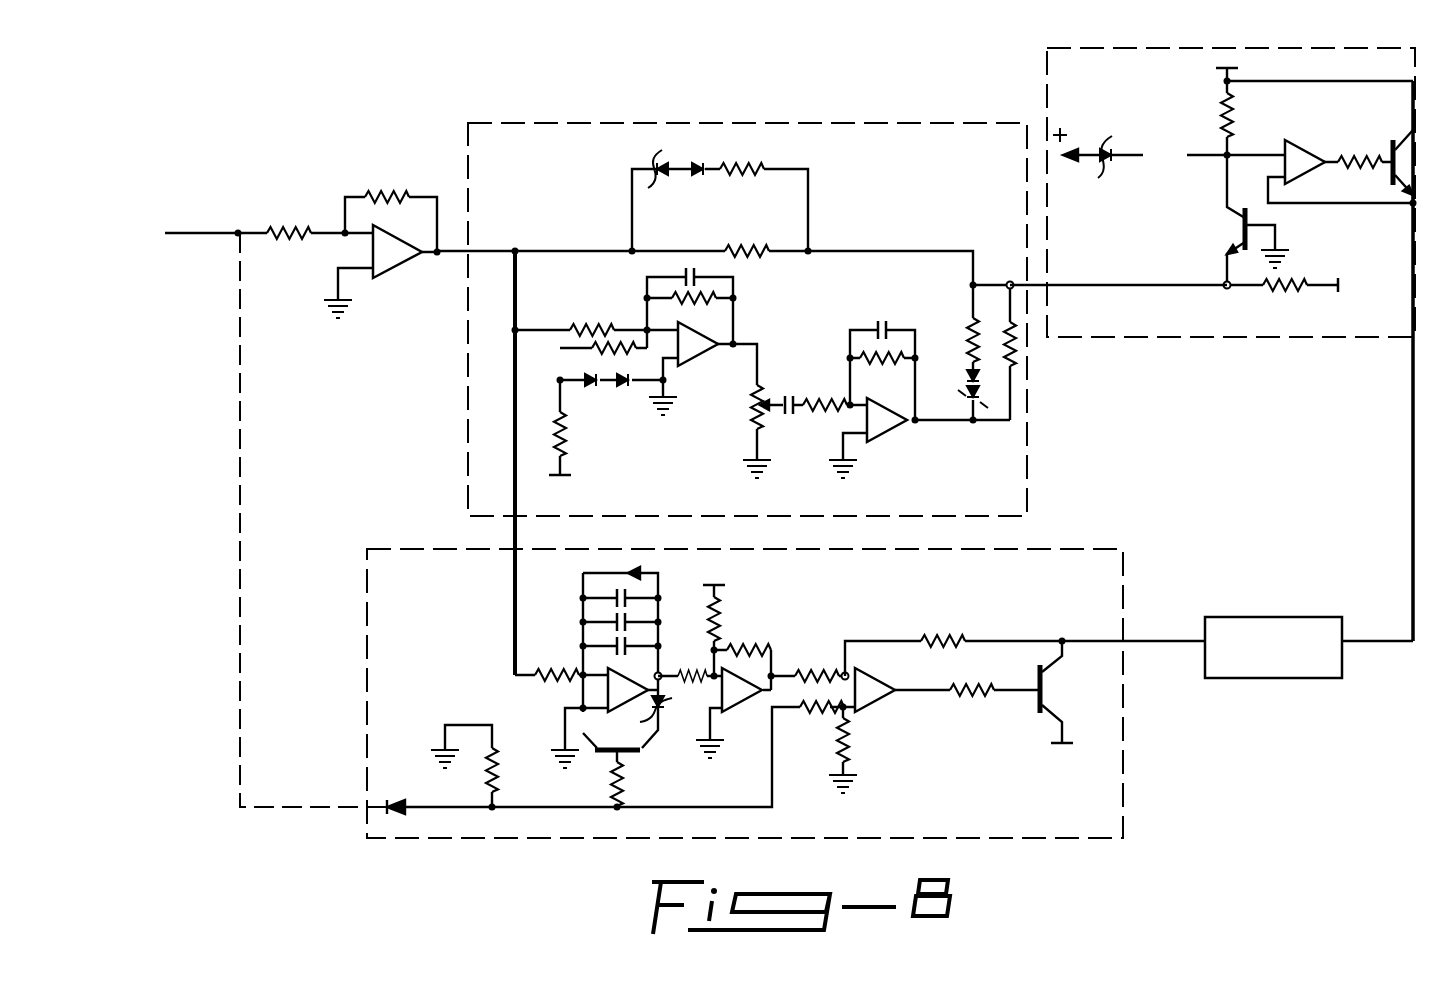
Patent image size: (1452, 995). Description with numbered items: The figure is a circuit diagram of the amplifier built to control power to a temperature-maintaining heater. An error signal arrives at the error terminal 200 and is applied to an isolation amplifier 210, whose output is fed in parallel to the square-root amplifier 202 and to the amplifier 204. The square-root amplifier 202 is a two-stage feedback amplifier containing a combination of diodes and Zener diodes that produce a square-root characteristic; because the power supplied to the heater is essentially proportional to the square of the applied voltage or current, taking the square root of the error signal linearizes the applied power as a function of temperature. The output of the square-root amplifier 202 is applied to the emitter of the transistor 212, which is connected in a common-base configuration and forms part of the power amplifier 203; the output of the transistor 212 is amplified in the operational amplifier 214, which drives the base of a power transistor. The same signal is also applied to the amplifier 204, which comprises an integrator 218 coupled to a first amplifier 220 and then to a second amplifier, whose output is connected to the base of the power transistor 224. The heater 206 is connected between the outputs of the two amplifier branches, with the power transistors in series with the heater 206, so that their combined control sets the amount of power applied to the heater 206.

The error terminal 200 is at (210, 238).
The square-root amplifier 202 is at (615, 124).
The power amplifier 203 is at (1171, 342).
The amplifier 204 is at (731, 665).
The heater 206 is at (1258, 628).
The isolation amplifier 210 is at (361, 214).
The transistor 212 is at (1237, 231).
The operational amplifier 214 is at (1302, 160).
The integrator 218 is at (596, 667).
The first amplifier 220 is at (740, 693).
The power transistor 224 is at (1055, 698).